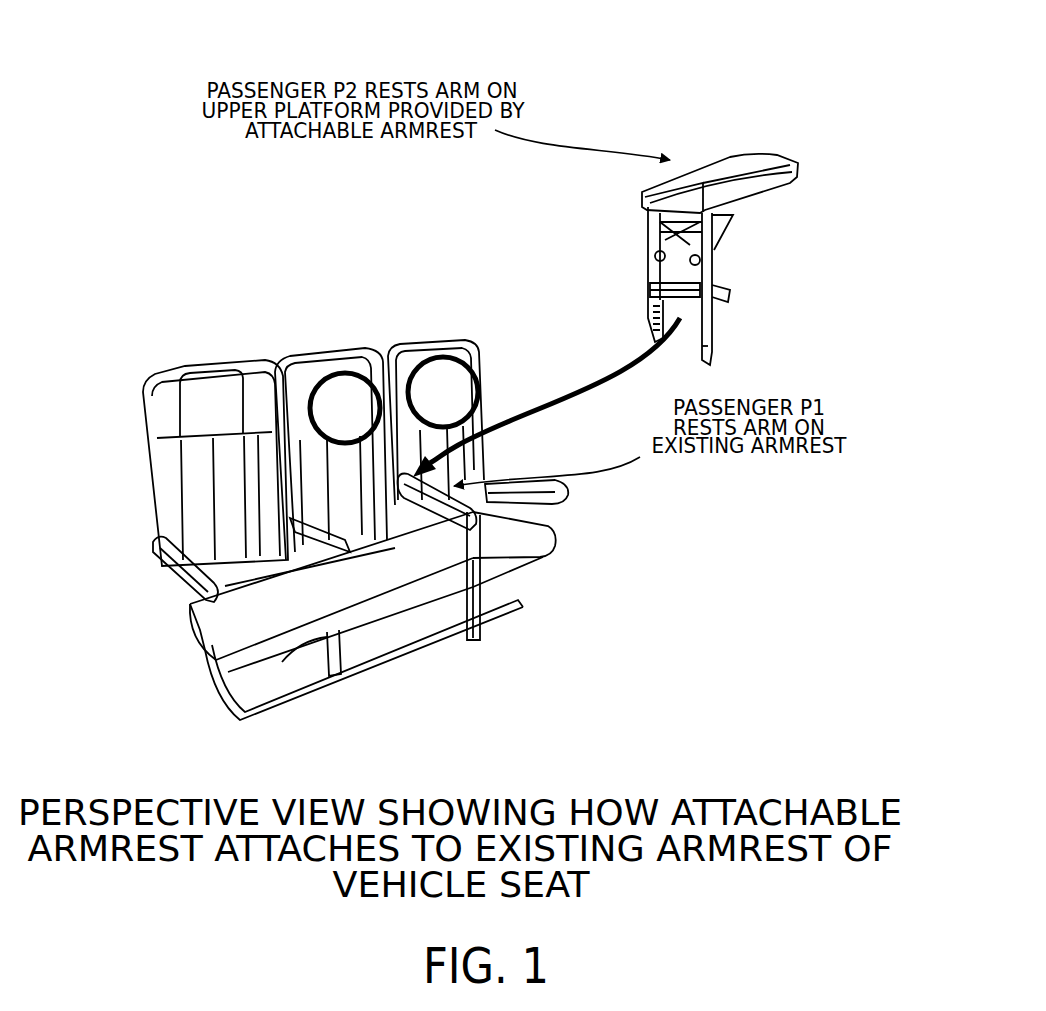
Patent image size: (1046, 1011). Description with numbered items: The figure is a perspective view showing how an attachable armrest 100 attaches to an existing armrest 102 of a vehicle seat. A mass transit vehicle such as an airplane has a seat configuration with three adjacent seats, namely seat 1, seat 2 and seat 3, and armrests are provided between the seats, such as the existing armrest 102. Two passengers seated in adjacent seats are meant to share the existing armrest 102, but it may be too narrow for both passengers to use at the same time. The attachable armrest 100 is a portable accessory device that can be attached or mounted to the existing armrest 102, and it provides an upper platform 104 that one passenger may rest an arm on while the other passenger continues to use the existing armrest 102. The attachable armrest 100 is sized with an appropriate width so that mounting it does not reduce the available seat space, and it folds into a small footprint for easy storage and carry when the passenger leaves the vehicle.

The attachable armrest 100 is at (767, 149).
The existing armrest 102 is at (480, 528).
The upper platform 104 is at (722, 168).
The seat 1 is at (424, 341).
The seat 2 is at (298, 349).
The seat 3 is at (181, 362).